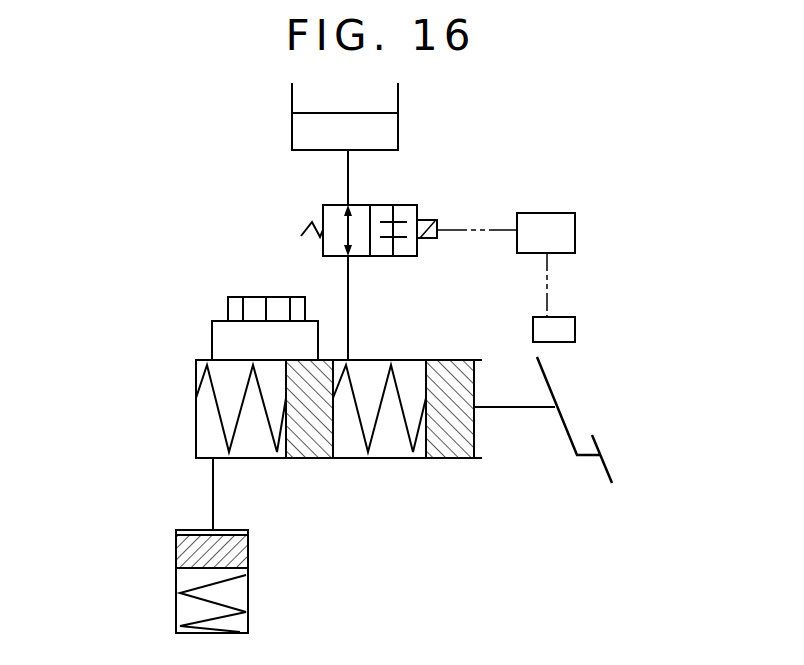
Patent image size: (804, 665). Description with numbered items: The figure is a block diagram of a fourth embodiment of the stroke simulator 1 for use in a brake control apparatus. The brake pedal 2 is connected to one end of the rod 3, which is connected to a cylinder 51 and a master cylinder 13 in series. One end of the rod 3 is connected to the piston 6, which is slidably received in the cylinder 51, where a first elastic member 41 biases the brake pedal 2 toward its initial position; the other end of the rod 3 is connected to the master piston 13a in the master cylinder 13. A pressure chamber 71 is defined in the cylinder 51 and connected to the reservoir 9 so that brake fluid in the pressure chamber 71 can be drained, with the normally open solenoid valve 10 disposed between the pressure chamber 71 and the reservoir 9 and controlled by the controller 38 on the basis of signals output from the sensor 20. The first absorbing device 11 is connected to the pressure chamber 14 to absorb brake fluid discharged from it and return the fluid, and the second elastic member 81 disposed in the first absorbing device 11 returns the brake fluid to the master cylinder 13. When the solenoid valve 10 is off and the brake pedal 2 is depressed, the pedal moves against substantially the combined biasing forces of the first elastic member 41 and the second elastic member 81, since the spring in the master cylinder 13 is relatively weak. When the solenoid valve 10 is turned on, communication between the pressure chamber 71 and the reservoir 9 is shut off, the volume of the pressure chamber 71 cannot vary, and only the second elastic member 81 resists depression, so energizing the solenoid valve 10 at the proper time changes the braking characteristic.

The stroke simulator 1 is at (275, 204).
The reservoir 9 is at (398, 131).
The solenoid valve 10 is at (377, 204).
The controller 38 is at (575, 223).
The sensor 20 is at (575, 322).
The master cylinder 13 is at (258, 474).
The master piston 13a is at (308, 447).
The pressure chamber 14 is at (205, 431).
The first elastic member 41 is at (350, 375).
The pressure chamber 71 is at (403, 372).
The cylinder 51 is at (389, 448).
The piston 6 is at (438, 426).
The rod 3 is at (510, 408).
The brake pedal 2 is at (603, 465).
The first absorbing device 11 is at (163, 559).
The second elastic member 81 is at (225, 618).